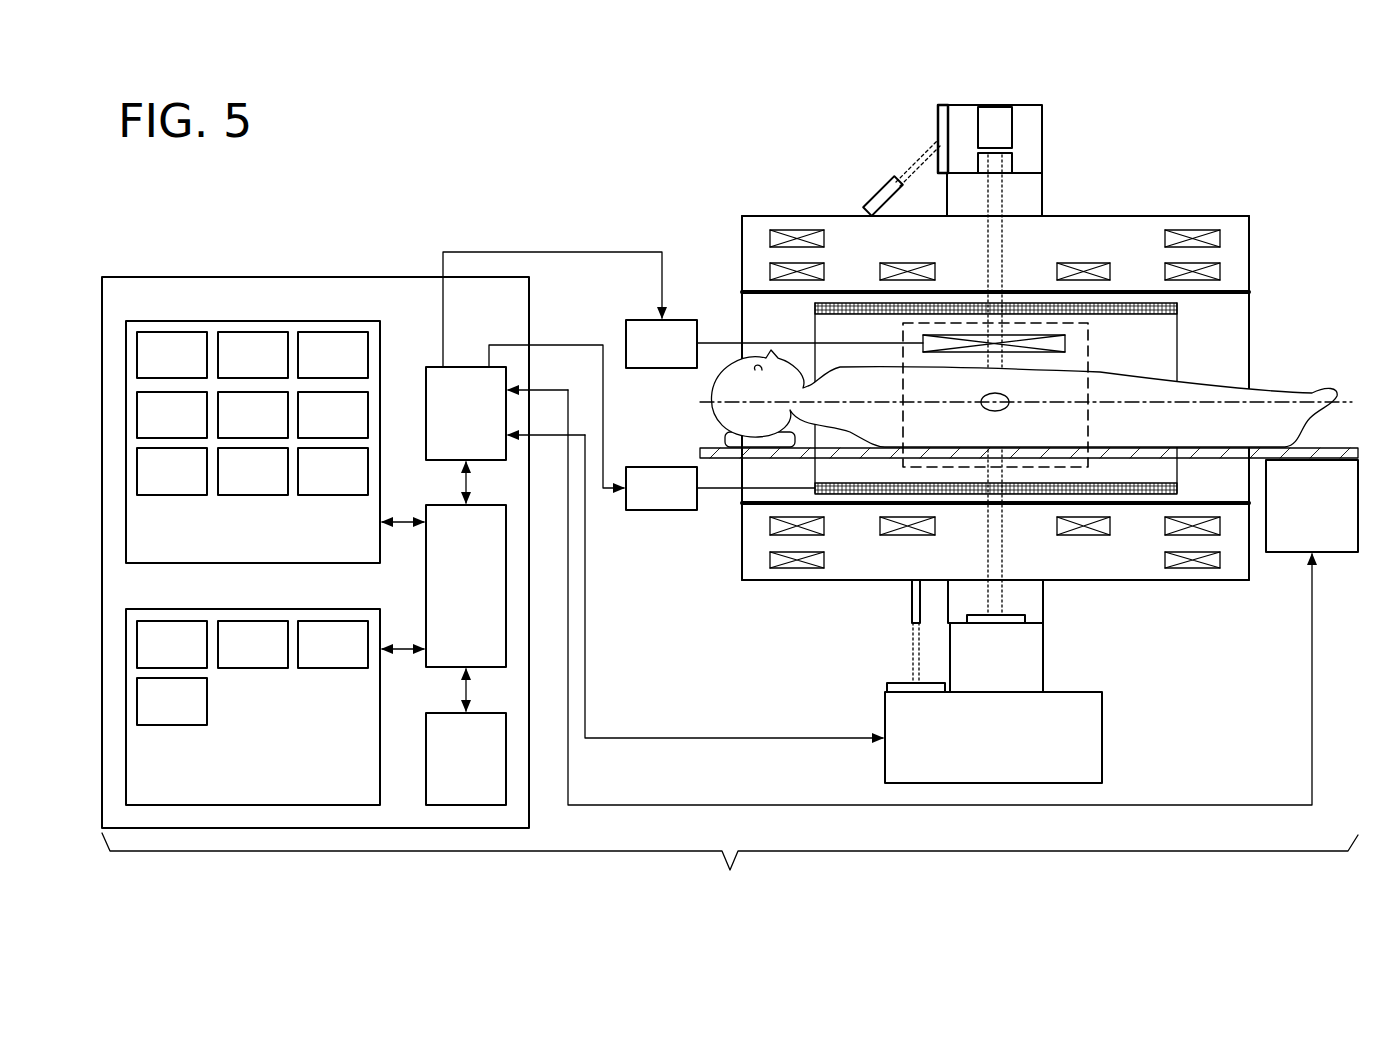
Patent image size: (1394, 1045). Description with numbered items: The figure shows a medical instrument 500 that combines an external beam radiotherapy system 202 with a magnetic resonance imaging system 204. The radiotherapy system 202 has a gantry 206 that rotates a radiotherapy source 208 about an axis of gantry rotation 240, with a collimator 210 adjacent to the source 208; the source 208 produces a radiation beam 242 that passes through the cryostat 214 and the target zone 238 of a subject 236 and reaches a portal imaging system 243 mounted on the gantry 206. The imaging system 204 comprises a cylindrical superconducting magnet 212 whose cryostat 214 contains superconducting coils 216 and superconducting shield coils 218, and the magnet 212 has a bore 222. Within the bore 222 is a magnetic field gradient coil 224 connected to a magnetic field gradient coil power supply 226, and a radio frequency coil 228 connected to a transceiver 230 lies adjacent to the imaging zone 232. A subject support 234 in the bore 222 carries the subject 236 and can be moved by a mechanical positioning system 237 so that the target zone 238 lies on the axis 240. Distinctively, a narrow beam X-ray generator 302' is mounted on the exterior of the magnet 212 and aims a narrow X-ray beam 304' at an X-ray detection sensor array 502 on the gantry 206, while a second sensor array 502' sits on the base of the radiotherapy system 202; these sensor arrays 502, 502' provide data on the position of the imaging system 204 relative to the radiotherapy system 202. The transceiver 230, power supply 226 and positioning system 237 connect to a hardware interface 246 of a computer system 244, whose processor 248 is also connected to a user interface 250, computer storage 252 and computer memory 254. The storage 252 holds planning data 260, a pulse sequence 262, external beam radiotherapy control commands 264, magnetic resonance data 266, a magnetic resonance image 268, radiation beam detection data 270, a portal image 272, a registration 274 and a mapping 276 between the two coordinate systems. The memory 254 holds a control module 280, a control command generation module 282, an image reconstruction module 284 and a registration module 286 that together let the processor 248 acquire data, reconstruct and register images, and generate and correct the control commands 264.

The magnetic resonance imaging system 204 is at (568, 200).
The computer system 244 is at (300, 277).
The computer storage 252 is at (225, 321).
The computer memory 254 is at (225, 609).
The planning data 260 is at (172, 355).
The pulse sequence 262 is at (253, 355).
The external beam radiotherapy control commands 264 is at (333, 355).
The magnetic resonance data 266 is at (172, 415).
The magnetic resonance image 268 is at (253, 415).
The radiation beam detection data 270 is at (333, 415).
The portal image 272 is at (172, 471).
The registration 274 is at (253, 471).
The mapping 276 is at (333, 471).
The control module 280 is at (172, 644).
The control command generation module 282 is at (253, 644).
The image reconstruction module 284 is at (333, 644).
The registration module 286 is at (172, 701).
The hardware interface 246 is at (466, 413).
The processor 248 is at (466, 586).
The user interface 250 is at (466, 759).
The transceiver 230 is at (774, 344).
The magnetic field gradient coil power supply 226 is at (720, 488).
The magnet 212 is at (742, 220).
The cryostat 214 is at (752, 235).
The superconducting coils 216 is at (775, 271).
The superconducting shield coils 218 is at (798, 238).
The bore 222 is at (1217, 328).
The magnetic field gradient coil 224 is at (815, 308).
The radio frequency coil 228 is at (1066, 343).
The imaging zone 232 is at (1090, 382).
The subject 236 is at (714, 380).
The subject support 234 is at (712, 455).
The target zone 238 is at (984, 405).
The axis of gantry rotation 240 is at (1285, 400).
The radiation beam 242 is at (990, 258).
The portal imaging system 243 is at (1027, 619).
The gantry 206 is at (1043, 193).
The radiotherapy source 208 is at (1010, 118).
The collimator 210 is at (1012, 160).
The external beam radiotherapy system 202 is at (1049, 118).
The X-ray detection sensor array 502 is at (907, 117).
The second sensor array 502' is at (916, 719).
The narrow beam X-ray generator 302' is at (855, 174).
The narrow X-ray beam 304' is at (874, 140).
The mechanical positioning system 237 is at (1330, 545).
The medical instrument 500 is at (730, 870).